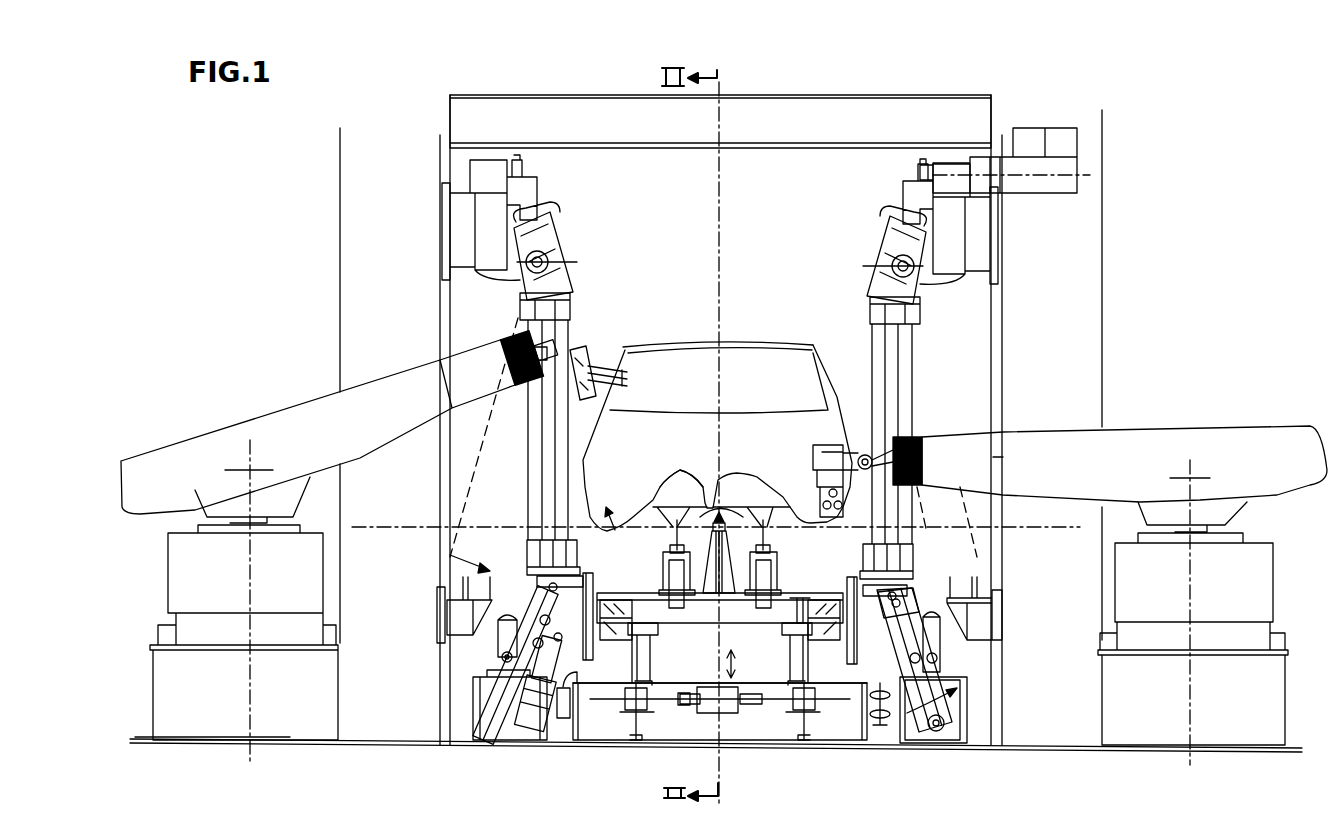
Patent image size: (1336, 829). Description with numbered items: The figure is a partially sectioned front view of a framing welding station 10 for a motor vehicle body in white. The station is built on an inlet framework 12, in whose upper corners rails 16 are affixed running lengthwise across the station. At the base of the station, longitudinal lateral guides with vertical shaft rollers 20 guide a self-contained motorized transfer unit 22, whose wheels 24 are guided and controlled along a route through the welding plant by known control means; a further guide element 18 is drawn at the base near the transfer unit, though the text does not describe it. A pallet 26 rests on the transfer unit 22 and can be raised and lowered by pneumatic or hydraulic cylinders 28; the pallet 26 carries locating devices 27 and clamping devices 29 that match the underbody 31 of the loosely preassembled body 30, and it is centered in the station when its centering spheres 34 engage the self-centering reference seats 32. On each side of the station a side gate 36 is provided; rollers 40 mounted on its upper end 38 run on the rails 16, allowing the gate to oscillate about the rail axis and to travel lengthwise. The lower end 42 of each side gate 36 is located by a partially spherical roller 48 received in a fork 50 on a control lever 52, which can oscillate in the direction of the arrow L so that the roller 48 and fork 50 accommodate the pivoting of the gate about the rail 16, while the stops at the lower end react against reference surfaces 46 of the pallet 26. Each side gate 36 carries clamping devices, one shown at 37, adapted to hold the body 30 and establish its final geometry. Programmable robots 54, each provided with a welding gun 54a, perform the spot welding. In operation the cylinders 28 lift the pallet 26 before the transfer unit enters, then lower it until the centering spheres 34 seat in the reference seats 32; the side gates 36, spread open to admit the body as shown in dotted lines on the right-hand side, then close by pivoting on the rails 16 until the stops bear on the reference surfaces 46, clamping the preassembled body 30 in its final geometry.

The framing welding station 10 is at (1112, 293).
The inlet framework 12 is at (822, 104).
The rails 16 is at (540, 262).
The adjustment wheel 18 is at (887, 728).
The vertical shaft rollers 20 is at (535, 722).
The self-contained motorized transfer unit 22 is at (688, 723).
The wheels 24 is at (630, 735).
The pallet 26 is at (732, 608).
The locating devices 27 is at (722, 525).
The pneumatic or hydraulic cylinders 28 is at (648, 663).
The clamping devices 29 is at (683, 533).
The preassembled body 30 is at (747, 427).
The underbody 31 is at (693, 476).
The reference seats 32 is at (648, 638).
The centering spheres 34 is at (803, 620).
The side gates 36 is at (572, 325).
The clamping device 37 is at (606, 378).
The upper ends 38 is at (558, 272).
The rollers 40 is at (537, 232).
The lower ends 42 is at (590, 503).
The reference surfaces 46 is at (588, 574).
The partially spherical roller 48 is at (540, 583).
The fork 50 is at (540, 607).
The control lever 52 is at (502, 620).
The programmable robots 54 is at (360, 385).
The welding gun 54a is at (813, 462).